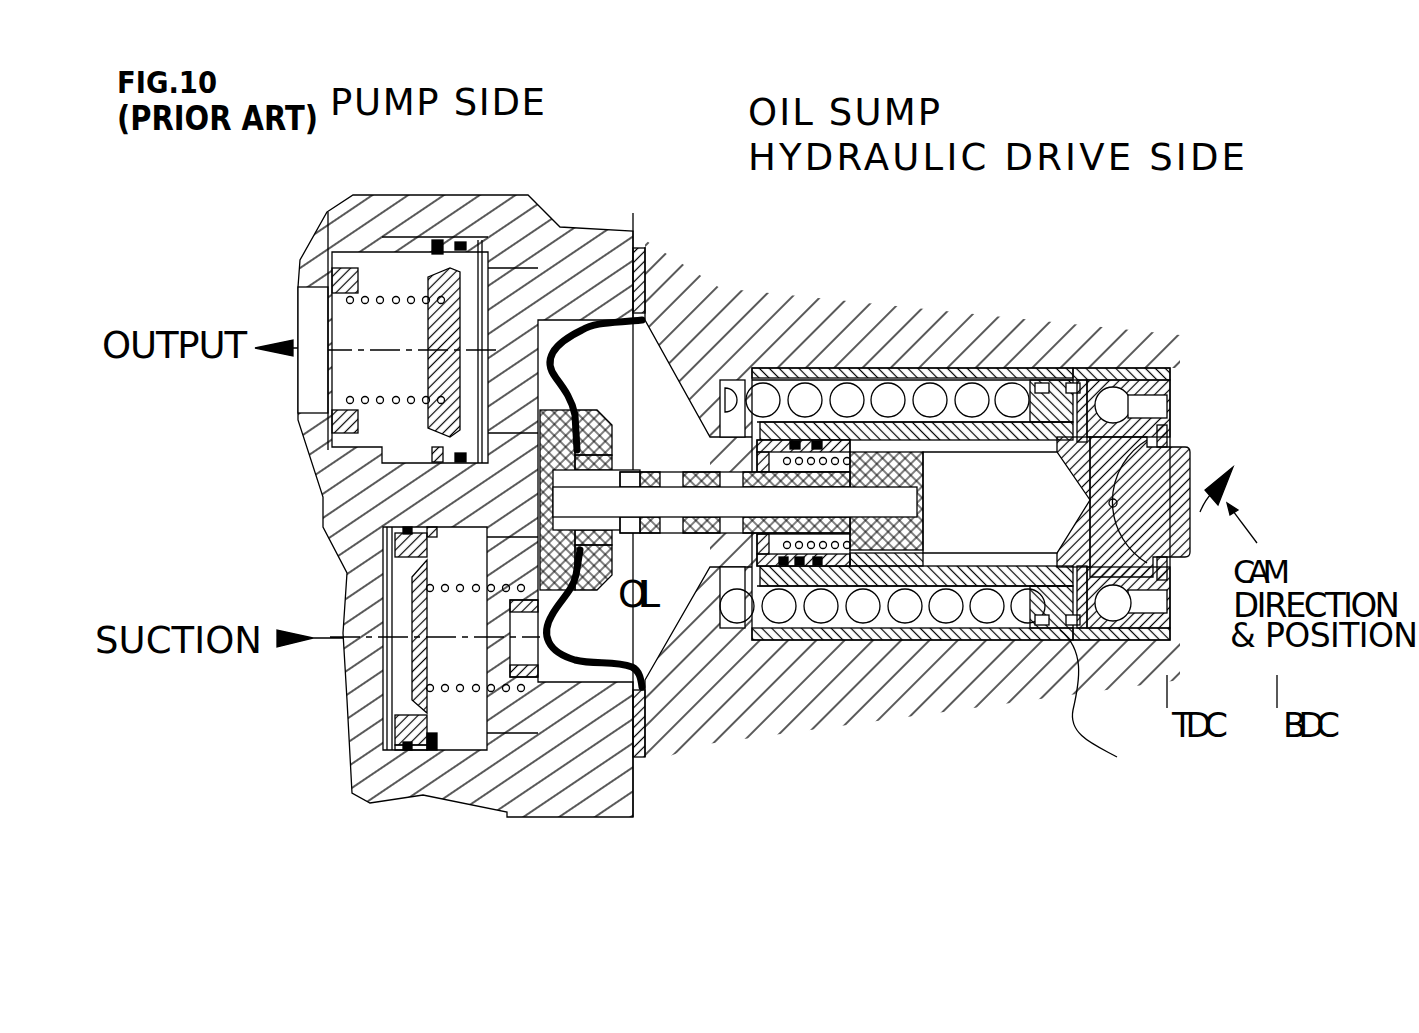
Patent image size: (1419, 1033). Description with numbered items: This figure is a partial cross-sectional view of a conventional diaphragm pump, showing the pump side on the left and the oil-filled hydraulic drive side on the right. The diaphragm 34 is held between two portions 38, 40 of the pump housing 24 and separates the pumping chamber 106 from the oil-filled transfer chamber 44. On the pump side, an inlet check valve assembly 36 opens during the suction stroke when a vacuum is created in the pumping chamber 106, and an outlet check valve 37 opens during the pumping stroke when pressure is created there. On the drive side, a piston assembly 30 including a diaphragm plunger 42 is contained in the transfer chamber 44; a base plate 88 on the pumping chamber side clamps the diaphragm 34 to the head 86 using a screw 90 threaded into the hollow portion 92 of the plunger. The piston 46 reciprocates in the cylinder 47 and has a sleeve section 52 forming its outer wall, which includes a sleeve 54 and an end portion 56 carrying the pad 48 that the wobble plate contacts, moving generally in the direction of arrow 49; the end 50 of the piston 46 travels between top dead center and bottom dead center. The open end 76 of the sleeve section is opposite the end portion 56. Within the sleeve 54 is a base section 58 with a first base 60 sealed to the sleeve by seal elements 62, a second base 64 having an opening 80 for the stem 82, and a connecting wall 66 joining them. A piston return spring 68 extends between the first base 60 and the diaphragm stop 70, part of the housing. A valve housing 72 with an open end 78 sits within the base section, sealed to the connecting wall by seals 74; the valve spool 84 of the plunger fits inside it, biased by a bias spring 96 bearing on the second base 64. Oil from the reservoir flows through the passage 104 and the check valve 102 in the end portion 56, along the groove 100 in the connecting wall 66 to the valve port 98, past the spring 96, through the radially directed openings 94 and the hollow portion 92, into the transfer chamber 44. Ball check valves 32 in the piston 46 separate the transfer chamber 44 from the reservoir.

The pump housing 24 is at (668, 225).
The piston assembly 30 is at (1030, 707).
The ball check valve 32 is at (1115, 373).
The diaphragm 34 is at (597, 343).
The inlet check valve assembly 36 is at (410, 657).
The outlet check valve 37 is at (440, 327).
The housing portion 38 is at (546, 206).
The housing portion 40 is at (643, 317).
The diaphragm plunger 42 is at (653, 460).
The transfer chamber 44 is at (655, 413).
The piston 46 is at (973, 647).
The cylinder 47 is at (1105, 700).
The pad 48 is at (1190, 457).
The arrow 49 is at (1233, 473).
The piston end 50 is at (1170, 570).
The sleeve section 52 is at (905, 363).
The sleeve 54 is at (942, 367).
The end portion 56 is at (1170, 440).
The base section 58 is at (978, 415).
The first base 60 is at (1053, 383).
The seal elements 62 is at (1040, 383).
The second base 64 is at (757, 452).
The connecting wall 66 is at (828, 440).
The piston return spring 68 is at (803, 383).
The diaphragm stop 70 is at (692, 597).
The valve housing 72 is at (940, 547).
The seals 74 is at (808, 562).
The open end 76 is at (758, 630).
The open end 78 is at (777, 553).
The opening 80 is at (767, 533).
The stem 82 is at (657, 520).
The valve spool 84 is at (903, 553).
The head 86 is at (593, 585).
The base plate 88 is at (550, 588).
The screw 90 is at (540, 485).
The hollow portion 92 is at (865, 527).
The radially directed openings 94 is at (632, 470).
The bias spring 96 is at (810, 460).
The valve port 98 is at (855, 557).
The groove 100 is at (947, 580).
The check valve 102 is at (1112, 613).
The passage 104 is at (1133, 615).
The pumping chamber 106 is at (550, 667).